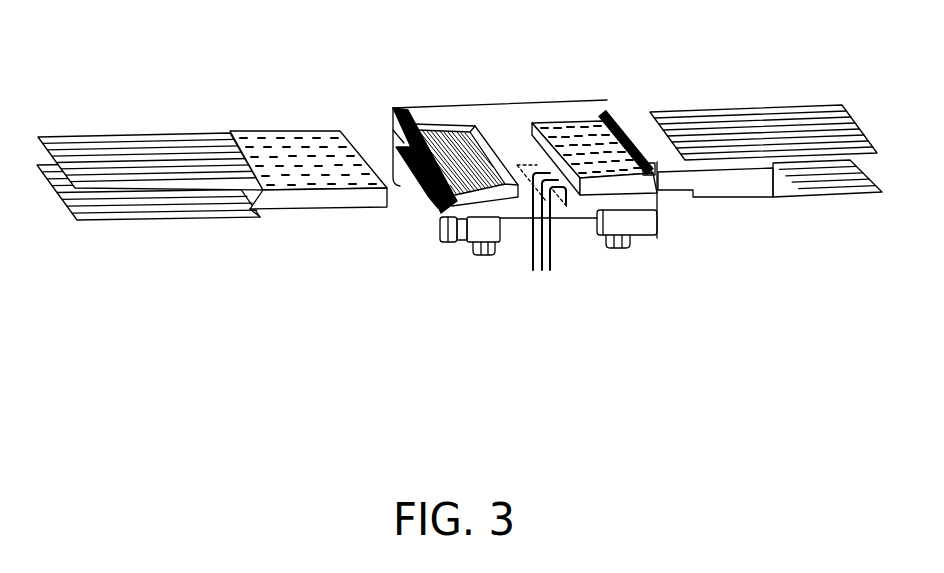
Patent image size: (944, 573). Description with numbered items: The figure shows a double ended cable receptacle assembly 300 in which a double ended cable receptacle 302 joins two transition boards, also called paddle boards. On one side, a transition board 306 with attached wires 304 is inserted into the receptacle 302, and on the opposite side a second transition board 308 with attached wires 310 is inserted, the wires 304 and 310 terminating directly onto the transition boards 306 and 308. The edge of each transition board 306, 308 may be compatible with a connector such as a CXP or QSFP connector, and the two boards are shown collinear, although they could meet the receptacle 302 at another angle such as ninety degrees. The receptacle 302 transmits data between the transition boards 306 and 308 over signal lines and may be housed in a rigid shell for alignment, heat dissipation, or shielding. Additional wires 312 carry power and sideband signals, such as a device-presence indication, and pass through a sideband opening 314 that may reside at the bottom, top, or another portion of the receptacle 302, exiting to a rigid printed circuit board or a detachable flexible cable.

The cable connection assembly 300 is at (456, 264).
The double ended cable receptacle 302 is at (480, 105).
The wires 304 is at (120, 133).
The transition board 306 is at (293, 132).
The transition board 308 is at (637, 117).
The wires 310 is at (752, 102).
The additional wires 312 is at (564, 266).
The sideband opening 314 is at (566, 205).